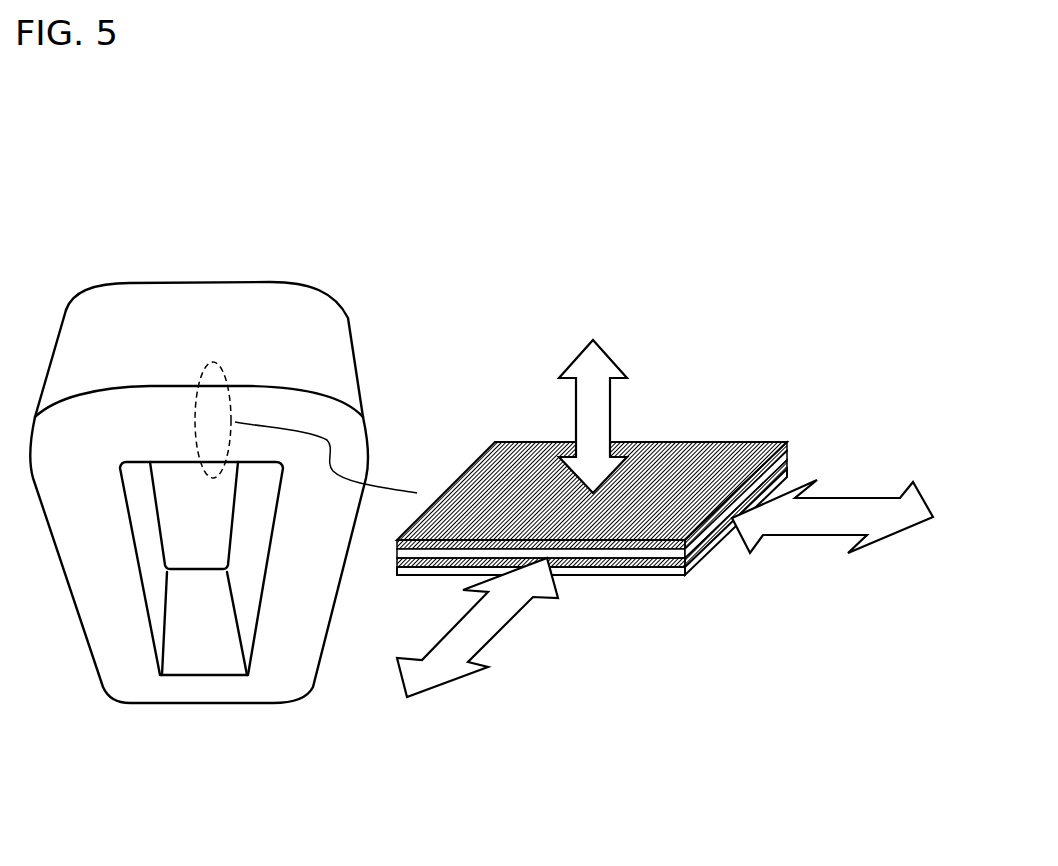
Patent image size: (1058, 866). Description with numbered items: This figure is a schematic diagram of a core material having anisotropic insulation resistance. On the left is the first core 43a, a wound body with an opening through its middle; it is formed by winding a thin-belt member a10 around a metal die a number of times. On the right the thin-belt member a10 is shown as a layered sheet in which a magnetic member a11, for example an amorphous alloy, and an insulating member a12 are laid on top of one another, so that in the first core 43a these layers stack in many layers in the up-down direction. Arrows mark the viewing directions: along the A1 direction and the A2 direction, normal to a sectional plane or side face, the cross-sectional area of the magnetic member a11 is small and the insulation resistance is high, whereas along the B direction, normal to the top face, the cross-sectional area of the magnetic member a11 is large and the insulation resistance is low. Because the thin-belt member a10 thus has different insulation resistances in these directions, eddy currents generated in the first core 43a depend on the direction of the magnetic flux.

The first core 43a is at (198, 295).
The thin-belt member a10 is at (652, 481).
The magnetic member a11 is at (784, 444).
The insulating member a12 is at (788, 456).
The B direction B is at (593, 416).
The A1 direction A1 is at (832, 516).
The A2 direction A2 is at (477, 627).